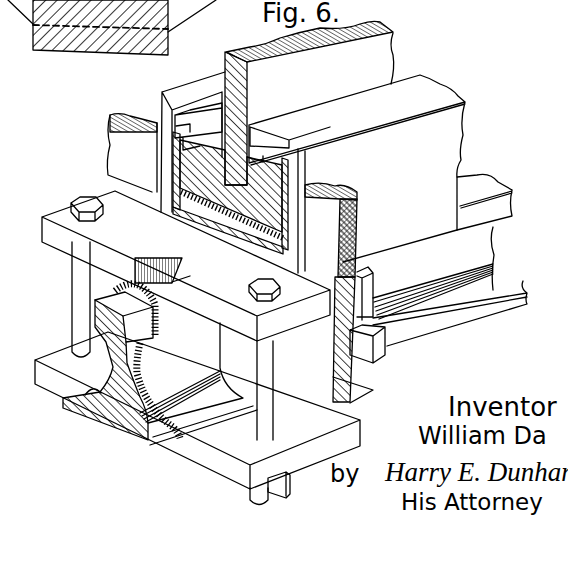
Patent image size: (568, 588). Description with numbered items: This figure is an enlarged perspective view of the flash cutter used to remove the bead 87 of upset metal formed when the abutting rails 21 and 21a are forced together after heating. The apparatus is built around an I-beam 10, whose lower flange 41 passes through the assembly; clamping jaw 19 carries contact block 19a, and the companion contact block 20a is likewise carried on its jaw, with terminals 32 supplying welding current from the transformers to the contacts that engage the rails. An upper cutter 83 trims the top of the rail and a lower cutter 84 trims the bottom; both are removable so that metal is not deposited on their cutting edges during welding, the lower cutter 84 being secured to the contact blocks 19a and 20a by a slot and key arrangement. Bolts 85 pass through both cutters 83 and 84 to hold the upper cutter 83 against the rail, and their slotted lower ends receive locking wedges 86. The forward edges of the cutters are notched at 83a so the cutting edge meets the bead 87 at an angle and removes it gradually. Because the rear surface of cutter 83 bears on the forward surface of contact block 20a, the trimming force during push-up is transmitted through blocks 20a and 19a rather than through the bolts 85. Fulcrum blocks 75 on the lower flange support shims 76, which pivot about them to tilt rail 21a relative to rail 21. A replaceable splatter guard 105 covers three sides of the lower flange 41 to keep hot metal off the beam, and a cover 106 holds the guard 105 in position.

The I-beam 10 is at (386, 50).
The clamping jaw 19 is at (39, 38).
The contact block 19a is at (372, 293).
The contact block 20a is at (167, 100).
The rail 21 is at (92, 420).
The rail 21a is at (493, 248).
The terminals 32 is at (123, 117).
The lower flange 41 is at (285, 192).
The fulcrum block 75 is at (200, 133).
The shims 76 is at (187, 116).
The cutter 83 is at (50, 229).
The notch 83a is at (168, 258).
The cutter 84 is at (352, 424).
The bolts 85 is at (72, 275).
The locking wedges 86 is at (290, 488).
The bead 87 is at (162, 313).
The splatter guard 105 is at (248, 228).
The cover 106 is at (277, 150).